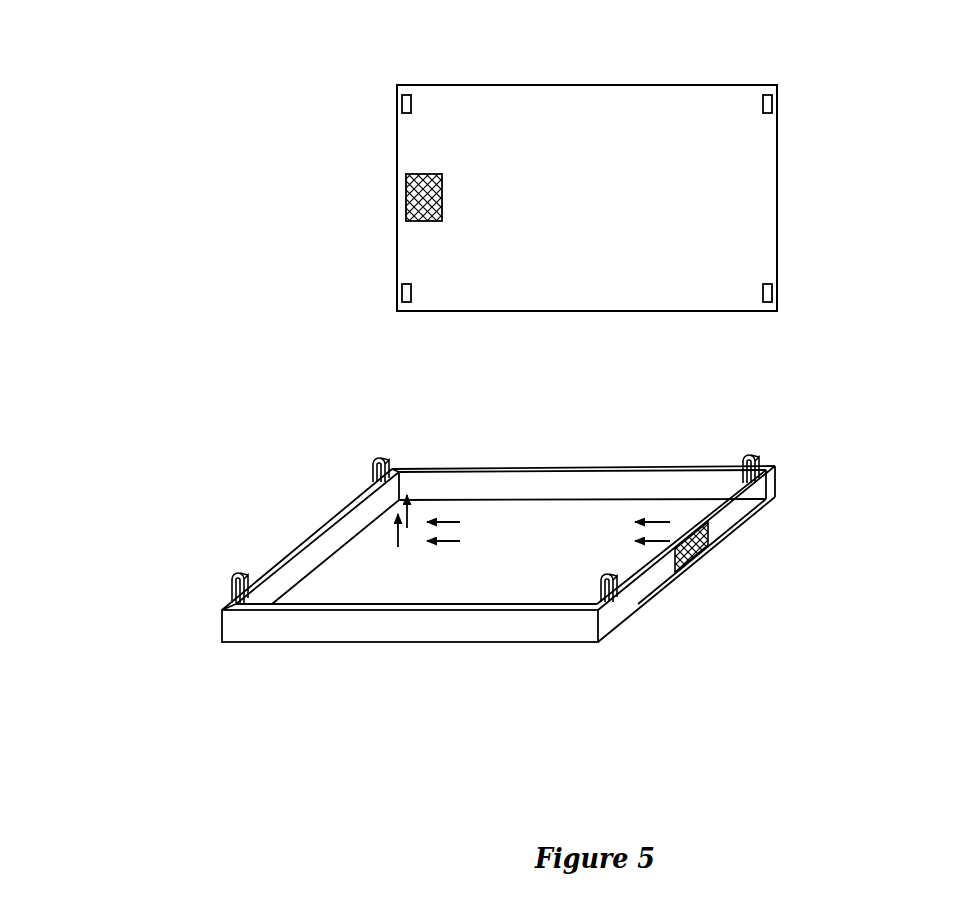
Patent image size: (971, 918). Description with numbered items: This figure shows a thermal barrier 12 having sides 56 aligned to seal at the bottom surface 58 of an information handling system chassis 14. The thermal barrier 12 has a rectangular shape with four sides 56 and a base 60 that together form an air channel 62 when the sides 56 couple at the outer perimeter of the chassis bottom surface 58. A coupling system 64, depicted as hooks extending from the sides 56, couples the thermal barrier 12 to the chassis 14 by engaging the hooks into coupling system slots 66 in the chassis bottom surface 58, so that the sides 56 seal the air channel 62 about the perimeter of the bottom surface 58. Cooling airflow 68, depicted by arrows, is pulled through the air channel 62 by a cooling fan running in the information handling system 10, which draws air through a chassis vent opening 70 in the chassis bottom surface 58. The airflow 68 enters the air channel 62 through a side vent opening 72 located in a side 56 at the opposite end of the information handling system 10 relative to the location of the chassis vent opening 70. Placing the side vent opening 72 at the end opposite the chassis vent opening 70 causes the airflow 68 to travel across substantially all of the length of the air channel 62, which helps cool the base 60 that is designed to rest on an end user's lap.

The information handling system 10 is at (310, 90).
The thermal barrier 12 is at (724, 450).
The information handling system chassis 14 is at (780, 195).
The sides 56 is at (630, 598).
The chassis bottom surface 58 is at (703, 207).
The base 60 is at (567, 590).
The air channel 62 is at (543, 579).
The coupling system 64 is at (493, 392).
The coupling system slots 66 is at (515, 30).
The airflow 68 is at (656, 501).
The chassis vent opening 70 is at (404, 193).
The side vent opening 72 is at (704, 548).